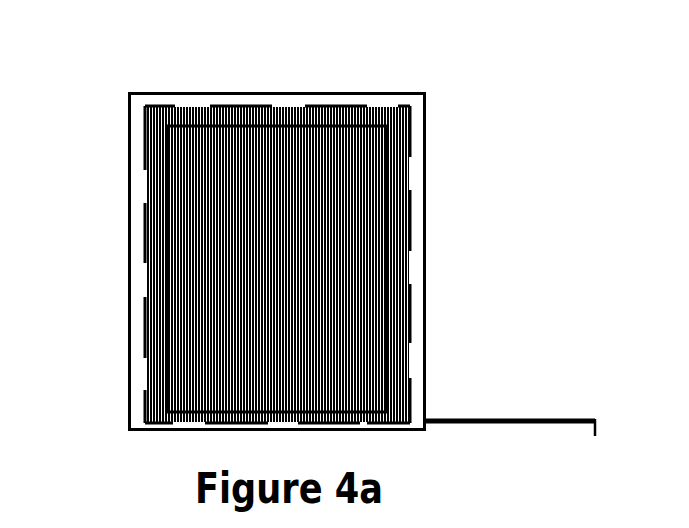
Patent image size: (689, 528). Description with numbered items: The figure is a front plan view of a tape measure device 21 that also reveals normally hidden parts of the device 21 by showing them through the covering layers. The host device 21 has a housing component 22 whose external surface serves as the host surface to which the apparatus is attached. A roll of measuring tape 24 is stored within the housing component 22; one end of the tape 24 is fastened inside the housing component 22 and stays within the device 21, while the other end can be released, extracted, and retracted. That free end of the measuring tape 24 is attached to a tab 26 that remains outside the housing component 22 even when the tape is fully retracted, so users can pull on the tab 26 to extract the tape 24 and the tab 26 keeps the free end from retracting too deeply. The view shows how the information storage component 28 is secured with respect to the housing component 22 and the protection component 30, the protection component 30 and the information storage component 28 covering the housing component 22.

The host device 21 is at (118, 83).
The housing component 22 is at (150, 218).
The measuring tape 24 is at (545, 417).
The tab 26 is at (581, 413).
The information storage component 28 is at (347, 231).
The protection component 30 is at (343, 92).